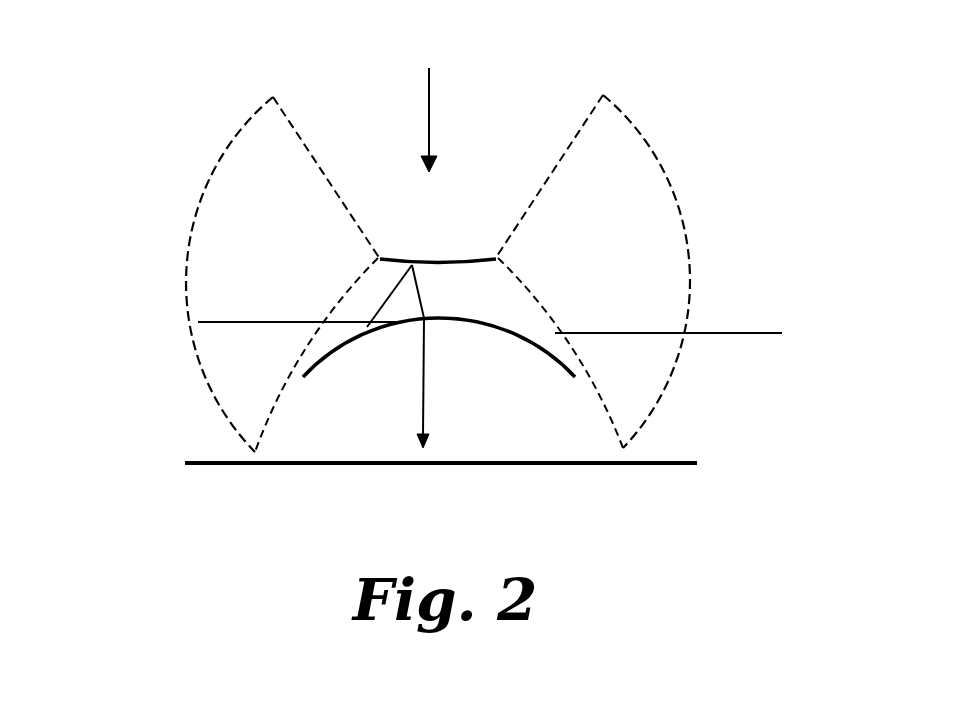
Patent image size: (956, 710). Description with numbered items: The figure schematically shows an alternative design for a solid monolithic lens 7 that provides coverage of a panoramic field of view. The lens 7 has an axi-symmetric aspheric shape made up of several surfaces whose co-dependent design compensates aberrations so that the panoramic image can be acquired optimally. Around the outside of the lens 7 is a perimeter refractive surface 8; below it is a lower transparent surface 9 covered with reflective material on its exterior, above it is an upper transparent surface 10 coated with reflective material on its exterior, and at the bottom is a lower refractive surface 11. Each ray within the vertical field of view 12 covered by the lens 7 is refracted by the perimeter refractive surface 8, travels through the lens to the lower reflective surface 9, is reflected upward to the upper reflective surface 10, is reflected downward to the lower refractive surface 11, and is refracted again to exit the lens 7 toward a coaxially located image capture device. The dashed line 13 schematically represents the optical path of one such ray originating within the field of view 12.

The lens 7 is at (429, 96).
The perimeter refractive surface 8 is at (690, 339).
The lower transparent surface 9 is at (537, 353).
The upper transparent surface 10 is at (472, 262).
The lower refractive surface 11 is at (457, 327).
The vertical field of view 12 is at (213, 167).
The dashed line 13 is at (243, 322).